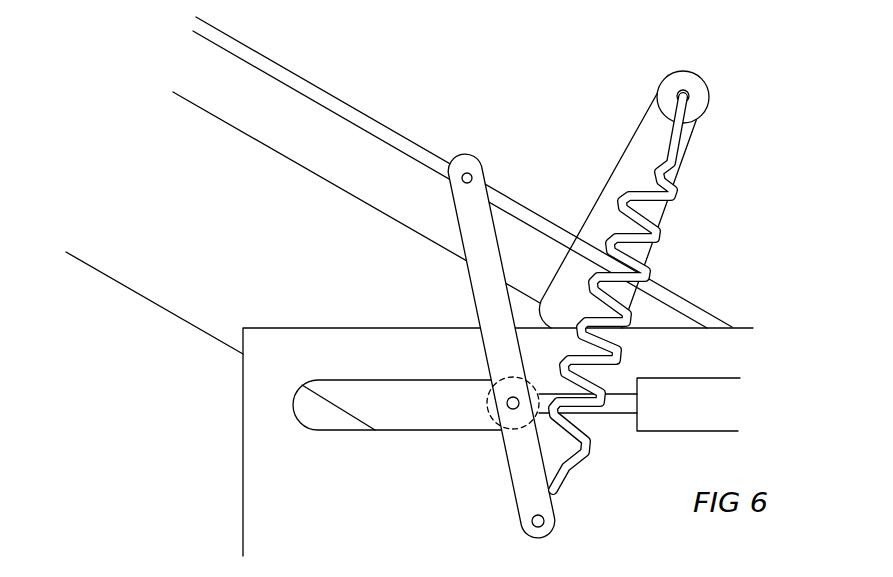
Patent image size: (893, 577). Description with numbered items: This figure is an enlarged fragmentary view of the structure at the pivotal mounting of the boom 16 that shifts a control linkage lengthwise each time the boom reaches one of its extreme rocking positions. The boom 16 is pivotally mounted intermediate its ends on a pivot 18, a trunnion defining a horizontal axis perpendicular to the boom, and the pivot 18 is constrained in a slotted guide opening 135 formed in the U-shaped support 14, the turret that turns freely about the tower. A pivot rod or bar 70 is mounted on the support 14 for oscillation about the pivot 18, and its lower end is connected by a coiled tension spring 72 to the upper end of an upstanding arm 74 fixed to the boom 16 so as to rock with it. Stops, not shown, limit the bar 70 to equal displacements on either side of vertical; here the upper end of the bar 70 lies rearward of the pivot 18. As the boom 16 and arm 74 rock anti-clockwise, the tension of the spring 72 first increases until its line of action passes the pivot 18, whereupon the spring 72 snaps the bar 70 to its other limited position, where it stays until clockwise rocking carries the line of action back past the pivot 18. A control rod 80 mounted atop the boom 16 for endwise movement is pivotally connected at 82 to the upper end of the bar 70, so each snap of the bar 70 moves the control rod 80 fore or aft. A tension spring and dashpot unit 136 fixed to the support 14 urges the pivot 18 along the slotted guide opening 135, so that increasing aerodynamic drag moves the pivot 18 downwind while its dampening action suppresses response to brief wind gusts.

The support 14 is at (258, 468).
The boom 16 is at (113, 247).
The pivot 18 is at (508, 410).
The pivot rod or bar 70 is at (483, 225).
The coiled tension spring 72 is at (660, 230).
The upstanding arm 74 is at (643, 137).
The control rod 80 is at (350, 110).
The pivotal connection 82 is at (472, 175).
The slotted guide openings 135 is at (382, 386).
The tension spring and dashpot unit 136 is at (718, 390).